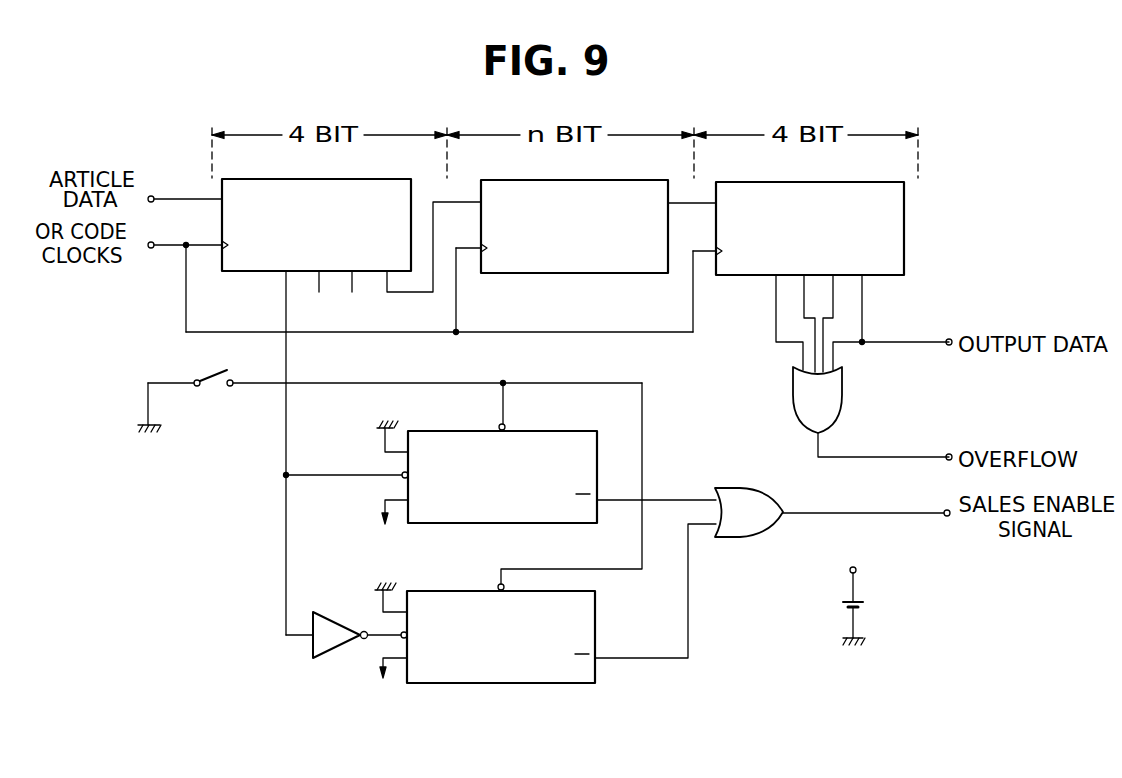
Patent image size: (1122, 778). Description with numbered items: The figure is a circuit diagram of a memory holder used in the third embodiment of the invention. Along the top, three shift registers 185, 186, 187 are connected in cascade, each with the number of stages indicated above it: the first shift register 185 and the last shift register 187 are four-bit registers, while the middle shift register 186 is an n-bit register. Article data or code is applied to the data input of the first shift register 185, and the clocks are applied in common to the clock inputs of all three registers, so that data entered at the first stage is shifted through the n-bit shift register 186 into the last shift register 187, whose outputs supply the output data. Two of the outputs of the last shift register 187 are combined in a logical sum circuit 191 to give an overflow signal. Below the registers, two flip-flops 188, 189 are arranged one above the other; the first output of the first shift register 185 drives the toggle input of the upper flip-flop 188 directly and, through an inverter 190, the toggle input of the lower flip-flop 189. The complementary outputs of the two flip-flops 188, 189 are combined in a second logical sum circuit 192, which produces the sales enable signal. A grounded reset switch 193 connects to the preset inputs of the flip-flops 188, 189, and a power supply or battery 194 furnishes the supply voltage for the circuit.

The shift register 185 is at (247, 271).
The shift register 186 is at (563, 273).
The shift register 187 is at (736, 275).
The flip-flop 188 is at (450, 523).
The flip-flop 189 is at (595, 617).
The inverter 190 is at (322, 612).
The logical sum circuit 191 is at (842, 388).
The logical sum circuit 192 is at (735, 537).
The reset switch 193 is at (214, 386).
The power supply or battery 194 is at (864, 605).